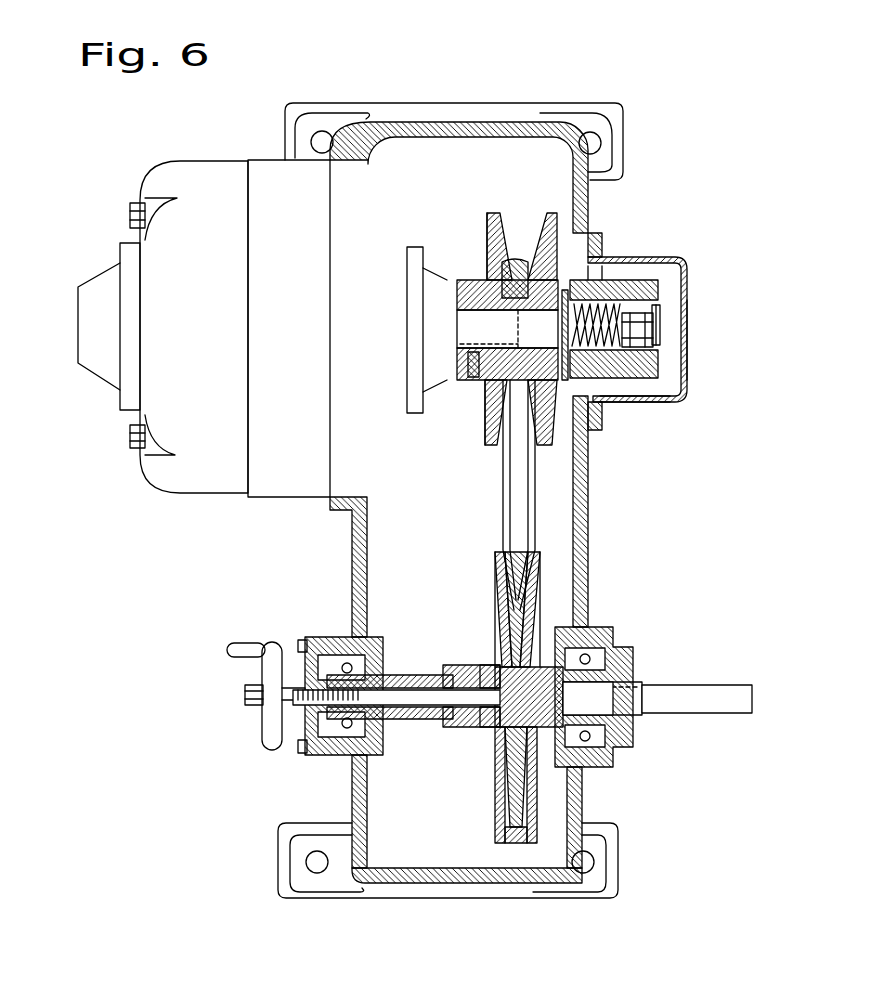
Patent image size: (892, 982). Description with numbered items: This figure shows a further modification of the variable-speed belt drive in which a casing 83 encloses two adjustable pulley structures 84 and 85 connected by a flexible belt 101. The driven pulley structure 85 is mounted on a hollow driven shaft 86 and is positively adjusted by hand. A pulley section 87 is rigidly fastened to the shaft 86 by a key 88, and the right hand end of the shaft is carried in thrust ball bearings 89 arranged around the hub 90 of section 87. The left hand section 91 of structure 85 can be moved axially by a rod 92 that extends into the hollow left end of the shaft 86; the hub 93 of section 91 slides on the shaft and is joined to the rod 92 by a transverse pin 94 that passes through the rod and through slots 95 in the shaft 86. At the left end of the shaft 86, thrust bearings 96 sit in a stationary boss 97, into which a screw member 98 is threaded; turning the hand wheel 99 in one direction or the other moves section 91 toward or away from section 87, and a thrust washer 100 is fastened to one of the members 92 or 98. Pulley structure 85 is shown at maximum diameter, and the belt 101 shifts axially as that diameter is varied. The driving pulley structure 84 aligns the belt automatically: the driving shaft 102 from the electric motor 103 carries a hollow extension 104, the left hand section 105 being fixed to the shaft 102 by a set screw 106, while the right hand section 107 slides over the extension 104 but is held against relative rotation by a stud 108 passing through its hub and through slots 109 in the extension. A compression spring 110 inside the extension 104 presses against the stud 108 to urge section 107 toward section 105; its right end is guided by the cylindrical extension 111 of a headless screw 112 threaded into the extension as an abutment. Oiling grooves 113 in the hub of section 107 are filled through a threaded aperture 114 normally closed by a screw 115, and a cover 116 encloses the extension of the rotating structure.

The casing 83 is at (583, 528).
The adjustable pulley structure 84 is at (504, 205).
The adjustable pulley structure 85 is at (485, 813).
The driven shaft 86 is at (627, 690).
The pulley section 87 is at (532, 597).
The key 88 is at (547, 633).
The thrust ball bearings 89 is at (617, 645).
The hub 90 is at (582, 792).
The left hand section 91 is at (495, 602).
The rod 92 is at (420, 700).
The hub 93 is at (455, 730).
The transverse pin 94 is at (483, 665).
The slots 95 is at (467, 667).
The thrust bearings 96 is at (335, 668).
The stationary boss 97 is at (300, 660).
The screw member 98 is at (307, 720).
The hand wheel 99 is at (263, 742).
The thrust washer 100 is at (388, 676).
The flexible belt 101 is at (535, 500).
The driving shaft 102 is at (480, 300).
The electric motor 103 is at (296, 371).
The hollow extension 104 is at (617, 280).
The left hand section 105 is at (483, 228).
The set screw 106 is at (473, 382).
The right hand section 107 is at (555, 223).
The stud 108 is at (592, 272).
The slots 109 is at (545, 335).
The compression spring 110 is at (660, 302).
The cylindrical extension 111 is at (670, 330).
The headless screw 112 is at (663, 343).
The oiling grooves 113 is at (655, 277).
The threaded aperture 114 is at (647, 372).
The screw 115 is at (635, 385).
The cover 116 is at (687, 362).